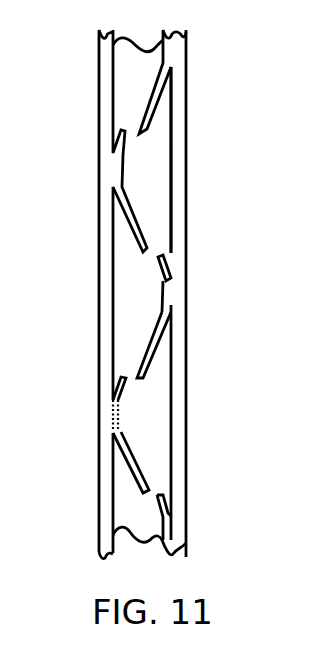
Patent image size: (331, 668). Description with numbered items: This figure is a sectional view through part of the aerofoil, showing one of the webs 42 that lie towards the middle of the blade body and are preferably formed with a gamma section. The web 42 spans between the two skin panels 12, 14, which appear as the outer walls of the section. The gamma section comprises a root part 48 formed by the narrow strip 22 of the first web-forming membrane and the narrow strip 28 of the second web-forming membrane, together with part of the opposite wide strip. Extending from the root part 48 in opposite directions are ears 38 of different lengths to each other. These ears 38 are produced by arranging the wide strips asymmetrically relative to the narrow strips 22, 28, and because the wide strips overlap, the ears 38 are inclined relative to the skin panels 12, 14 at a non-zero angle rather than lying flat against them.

The skin panel 12 is at (99, 107).
The skin panel 14 is at (178, 99).
The narrow strip 22 is at (112, 412).
The narrow strip 28 is at (122, 420).
The ear 38 is at (158, 268).
The web 42 is at (175, 262).
The root part 48 is at (168, 292).